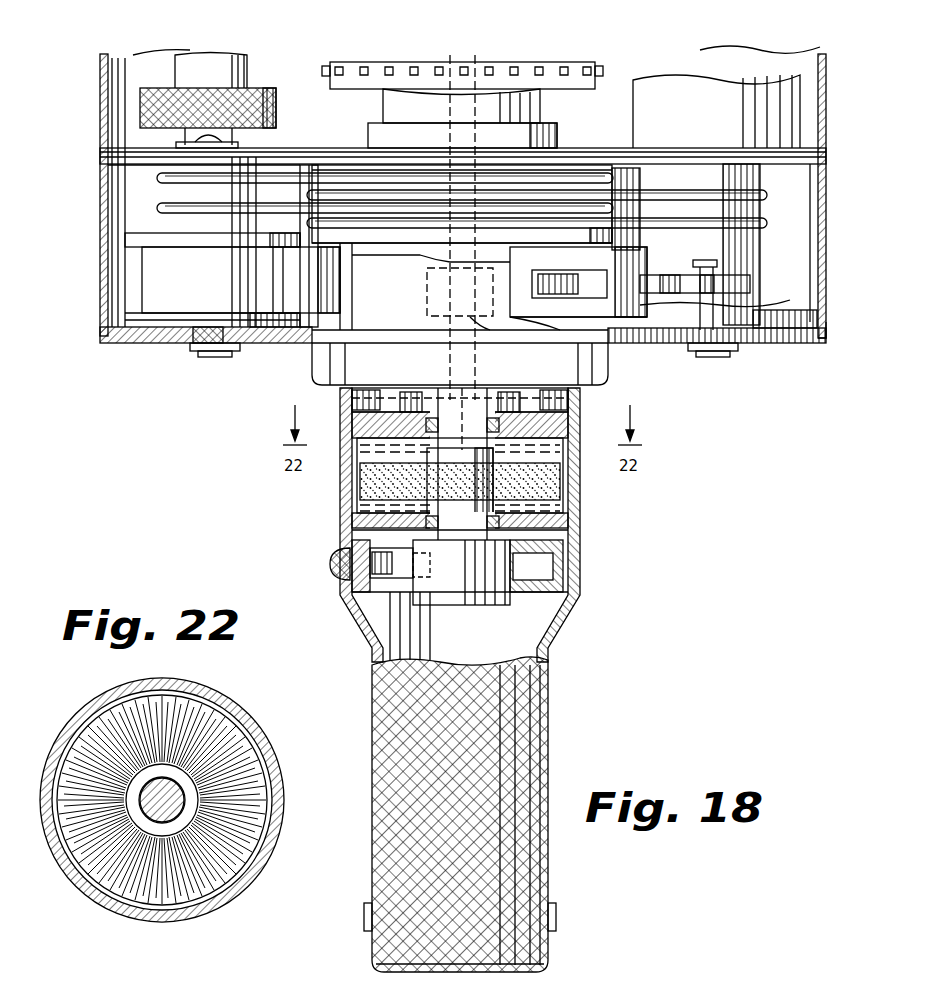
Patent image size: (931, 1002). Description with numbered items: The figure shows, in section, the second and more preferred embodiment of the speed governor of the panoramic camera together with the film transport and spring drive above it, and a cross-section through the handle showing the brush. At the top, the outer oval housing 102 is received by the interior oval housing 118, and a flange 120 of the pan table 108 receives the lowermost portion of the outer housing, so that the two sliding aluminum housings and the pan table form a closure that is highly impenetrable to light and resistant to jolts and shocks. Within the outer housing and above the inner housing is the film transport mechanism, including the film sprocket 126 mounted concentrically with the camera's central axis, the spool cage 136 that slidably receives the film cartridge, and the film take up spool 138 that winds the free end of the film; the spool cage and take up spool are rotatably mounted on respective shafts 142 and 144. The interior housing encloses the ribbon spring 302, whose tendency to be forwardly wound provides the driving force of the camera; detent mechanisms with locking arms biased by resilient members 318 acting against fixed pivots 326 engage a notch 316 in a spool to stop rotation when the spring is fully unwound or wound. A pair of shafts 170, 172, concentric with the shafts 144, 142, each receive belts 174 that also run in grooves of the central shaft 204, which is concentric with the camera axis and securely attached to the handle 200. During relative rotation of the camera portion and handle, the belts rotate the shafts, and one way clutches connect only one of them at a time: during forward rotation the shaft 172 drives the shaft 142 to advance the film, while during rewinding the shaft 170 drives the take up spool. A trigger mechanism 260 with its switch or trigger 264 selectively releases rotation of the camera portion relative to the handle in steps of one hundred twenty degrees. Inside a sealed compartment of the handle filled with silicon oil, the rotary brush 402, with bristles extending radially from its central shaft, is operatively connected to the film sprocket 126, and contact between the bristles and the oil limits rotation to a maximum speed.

In FIG. 18, the outer oval housing 102 is at (826, 249).
In FIG. 18, the pan table 108 is at (790, 347).
In FIG. 18, the interior oval housing 118 is at (826, 283).
In FIG. 18, the flange 120 is at (826, 323).
In FIG. 18, the film sprocket 126 is at (547, 66).
In FIG. 18, the spool cage 136 is at (788, 112).
In FIG. 18, the film take up spool 138 is at (158, 100).
In FIG. 18, the shaft 142 is at (712, 358).
In FIG. 18, the shaft 144 is at (205, 338).
In FIG. 18, the shaft 170 is at (173, 223).
In FIG. 18, the shaft 172 is at (748, 248).
In FIG. 18, the belts 174 is at (170, 204).
In FIG. 18, the handle 200 is at (562, 642).
In FIG. 22, the handle 200 is at (278, 758).
In FIG. 18, the central shaft 204 is at (355, 240).
In FIG. 18, the trigger mechanism 260 is at (572, 569).
In FIG. 18, the switch or trigger 264 is at (338, 562).
In FIG. 18, the ribbon spring 302 is at (160, 298).
In FIG. 18, the notch 316 is at (622, 305).
In FIG. 18, the resilient member 318 is at (588, 282).
In FIG. 18, the fixed pivot 326 is at (707, 305).
In FIG. 18, the rotary brush 402 is at (572, 487).
In FIG. 22, the rotary brush 402 is at (100, 903).